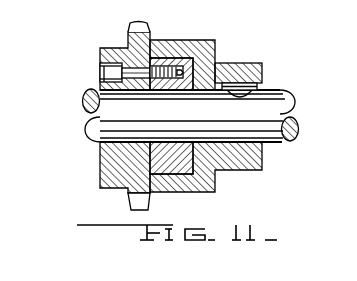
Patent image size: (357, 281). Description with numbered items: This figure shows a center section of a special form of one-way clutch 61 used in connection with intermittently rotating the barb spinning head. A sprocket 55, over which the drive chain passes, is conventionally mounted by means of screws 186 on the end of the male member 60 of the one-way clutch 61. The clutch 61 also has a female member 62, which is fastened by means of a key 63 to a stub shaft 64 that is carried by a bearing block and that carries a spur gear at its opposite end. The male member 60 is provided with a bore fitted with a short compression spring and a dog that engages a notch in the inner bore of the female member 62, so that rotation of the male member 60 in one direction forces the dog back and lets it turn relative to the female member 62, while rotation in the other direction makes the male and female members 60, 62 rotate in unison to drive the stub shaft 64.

The screws 186 is at (98, 68).
The sprocket 55 is at (121, 47).
The male member 60 is at (152, 41).
The one-way clutch 61 is at (194, 38).
The female member 62 is at (217, 52).
The key 63 is at (240, 84).
The stub shaft 64 is at (277, 89).